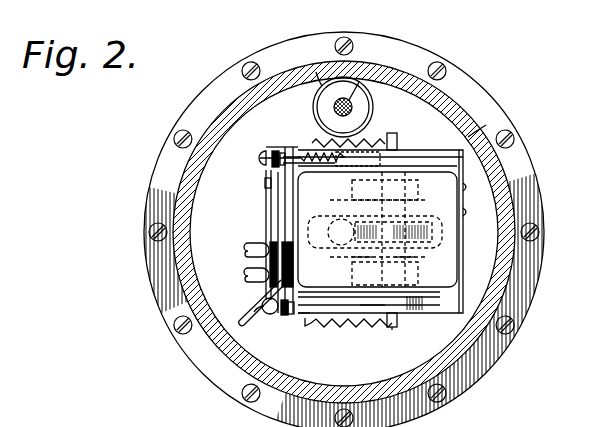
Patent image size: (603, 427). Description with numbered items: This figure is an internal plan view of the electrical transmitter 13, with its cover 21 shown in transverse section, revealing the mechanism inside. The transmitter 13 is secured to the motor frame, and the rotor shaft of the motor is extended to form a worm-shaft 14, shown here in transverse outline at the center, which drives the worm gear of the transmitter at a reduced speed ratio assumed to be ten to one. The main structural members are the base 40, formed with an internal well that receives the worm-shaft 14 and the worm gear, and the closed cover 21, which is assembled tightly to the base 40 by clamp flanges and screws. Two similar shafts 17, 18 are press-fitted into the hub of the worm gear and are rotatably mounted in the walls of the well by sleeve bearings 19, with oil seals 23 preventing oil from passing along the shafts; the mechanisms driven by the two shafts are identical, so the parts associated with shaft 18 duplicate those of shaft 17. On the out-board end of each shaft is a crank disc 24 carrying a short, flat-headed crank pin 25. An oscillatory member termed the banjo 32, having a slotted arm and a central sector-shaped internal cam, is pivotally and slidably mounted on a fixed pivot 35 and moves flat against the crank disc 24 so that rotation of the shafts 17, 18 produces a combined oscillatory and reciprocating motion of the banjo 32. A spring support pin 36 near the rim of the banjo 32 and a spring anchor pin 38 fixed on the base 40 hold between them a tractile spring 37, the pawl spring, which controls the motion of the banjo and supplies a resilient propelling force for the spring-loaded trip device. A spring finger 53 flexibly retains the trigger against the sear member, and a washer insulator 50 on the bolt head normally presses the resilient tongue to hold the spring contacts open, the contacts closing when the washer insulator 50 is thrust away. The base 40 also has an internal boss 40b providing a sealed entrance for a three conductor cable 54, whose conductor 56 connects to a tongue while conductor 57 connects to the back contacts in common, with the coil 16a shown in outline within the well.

The transmitter 13 is at (547, 169).
The cover 21 is at (183, 173).
The three conductor cable 54 is at (368, 84).
The internal boss 40b is at (322, 86).
The crank disc 24 is at (432, 300).
The shaft 18 is at (405, 205).
The worm-shaft 14 is at (330, 224).
The coil 16a is at (443, 230).
The base 40 is at (450, 248).
The sleeve bearing 19 is at (354, 259).
The shaft 17 is at (418, 257).
The oil seal 23 is at (358, 277).
The spring finger 53 is at (447, 300).
The banjo 32 is at (406, 313).
The tractile spring 37 is at (332, 326).
The fixed pivot 35 is at (306, 322).
The crank pin 25 is at (371, 320).
The spring support pin 36 is at (392, 330).
The conductor 57 is at (244, 308).
The conductor 56 is at (256, 314).
The washer insulator 50 is at (272, 316).
The spring anchor pin 38 is at (290, 318).